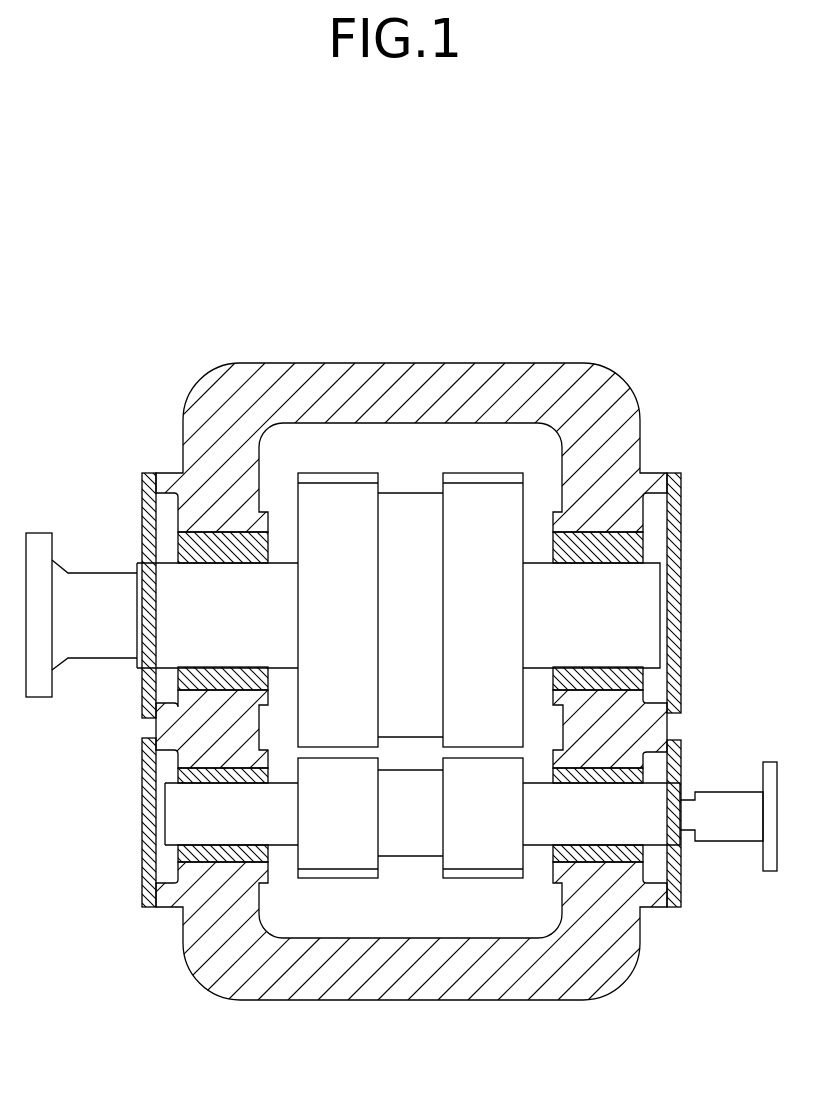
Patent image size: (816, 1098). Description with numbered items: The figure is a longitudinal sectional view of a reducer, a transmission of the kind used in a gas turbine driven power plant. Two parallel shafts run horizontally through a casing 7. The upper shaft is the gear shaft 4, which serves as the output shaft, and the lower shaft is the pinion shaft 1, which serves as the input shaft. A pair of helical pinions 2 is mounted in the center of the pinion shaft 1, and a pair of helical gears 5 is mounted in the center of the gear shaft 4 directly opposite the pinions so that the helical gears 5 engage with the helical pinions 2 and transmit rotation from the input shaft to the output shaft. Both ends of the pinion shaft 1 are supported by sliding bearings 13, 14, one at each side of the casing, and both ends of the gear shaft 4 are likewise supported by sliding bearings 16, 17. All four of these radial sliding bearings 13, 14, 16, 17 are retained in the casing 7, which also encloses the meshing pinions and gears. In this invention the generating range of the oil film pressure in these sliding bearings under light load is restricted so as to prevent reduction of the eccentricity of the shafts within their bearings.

The pinion shaft 1 is at (197, 820).
The helical pinions 2 is at (342, 852).
The gear shaft 4 is at (195, 578).
The helical gears 5 is at (333, 503).
The casing 7 is at (415, 380).
The sliding bearing 13 is at (602, 866).
The sliding bearing 14 is at (227, 868).
The sliding bearing 16 is at (602, 560).
The sliding bearing 17 is at (225, 560).